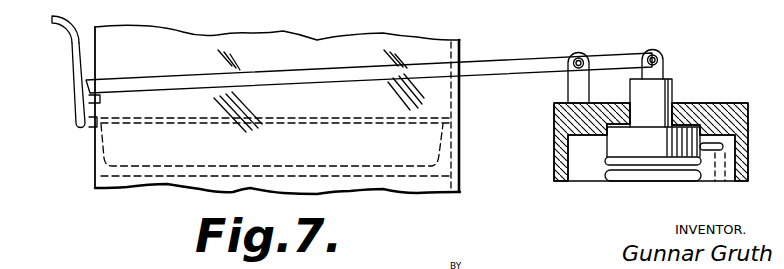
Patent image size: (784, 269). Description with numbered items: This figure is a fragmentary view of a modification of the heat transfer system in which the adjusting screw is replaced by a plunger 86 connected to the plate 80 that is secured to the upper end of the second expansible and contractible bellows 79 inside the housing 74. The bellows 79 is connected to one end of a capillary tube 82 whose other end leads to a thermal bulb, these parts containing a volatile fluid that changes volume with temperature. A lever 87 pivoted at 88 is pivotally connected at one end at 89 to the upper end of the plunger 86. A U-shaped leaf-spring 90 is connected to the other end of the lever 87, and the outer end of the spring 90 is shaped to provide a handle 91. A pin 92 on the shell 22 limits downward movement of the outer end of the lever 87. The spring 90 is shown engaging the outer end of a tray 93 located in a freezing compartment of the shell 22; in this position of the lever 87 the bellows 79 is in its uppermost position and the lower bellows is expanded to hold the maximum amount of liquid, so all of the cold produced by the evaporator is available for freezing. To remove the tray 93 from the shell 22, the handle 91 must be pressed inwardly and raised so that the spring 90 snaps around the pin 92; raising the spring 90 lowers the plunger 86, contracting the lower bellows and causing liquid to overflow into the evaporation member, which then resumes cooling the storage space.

The shell 22 is at (461, 44).
The housing 74 is at (556, 148).
The second expansible and contractible bellows 79 is at (610, 172).
The plate 80 is at (697, 128).
The capillary tube 82 is at (723, 147).
The plunger 86 is at (670, 99).
The lever 87 is at (531, 67).
The pivot 88 is at (582, 56).
The pivotal connection 89 is at (657, 53).
The U-shaped leaf-spring 90 is at (74, 108).
The handle 91 is at (66, 26).
The pin 92 is at (100, 101).
The tray 93 is at (343, 118).